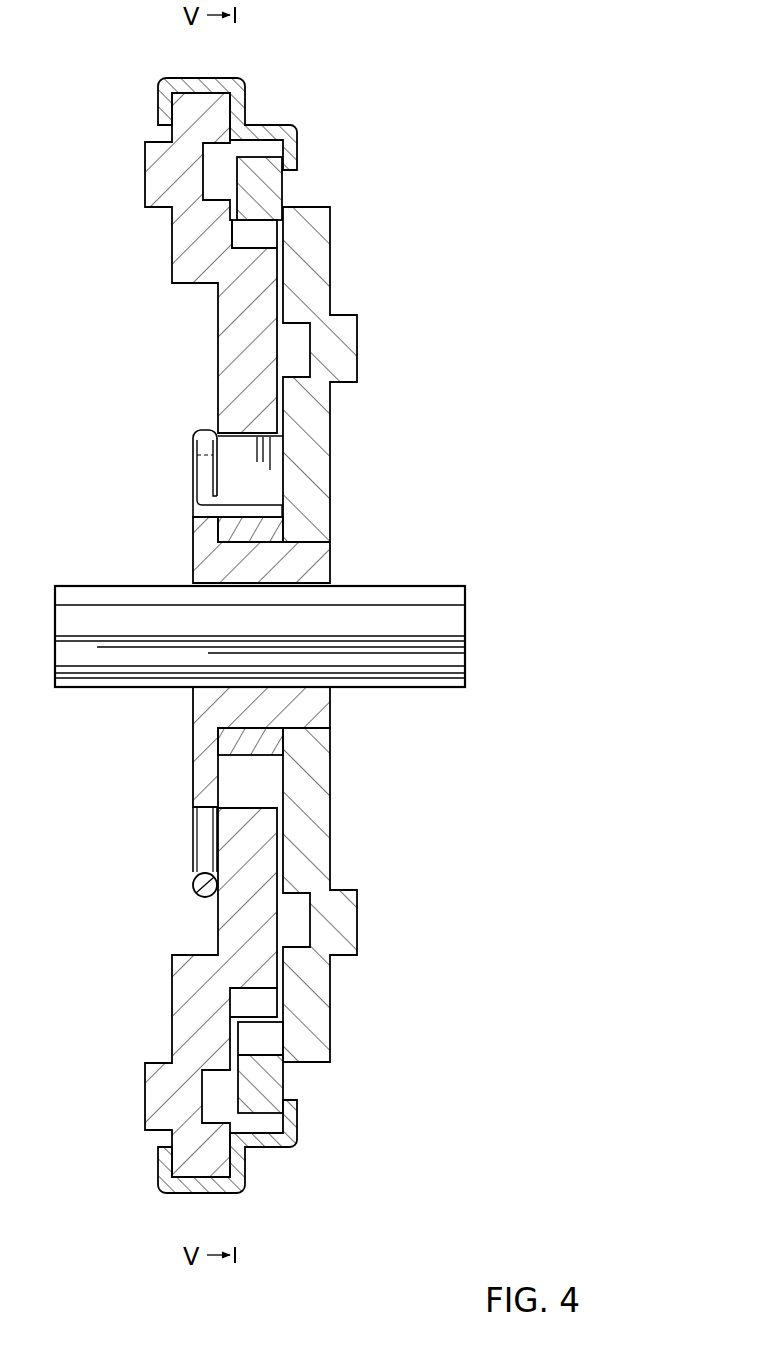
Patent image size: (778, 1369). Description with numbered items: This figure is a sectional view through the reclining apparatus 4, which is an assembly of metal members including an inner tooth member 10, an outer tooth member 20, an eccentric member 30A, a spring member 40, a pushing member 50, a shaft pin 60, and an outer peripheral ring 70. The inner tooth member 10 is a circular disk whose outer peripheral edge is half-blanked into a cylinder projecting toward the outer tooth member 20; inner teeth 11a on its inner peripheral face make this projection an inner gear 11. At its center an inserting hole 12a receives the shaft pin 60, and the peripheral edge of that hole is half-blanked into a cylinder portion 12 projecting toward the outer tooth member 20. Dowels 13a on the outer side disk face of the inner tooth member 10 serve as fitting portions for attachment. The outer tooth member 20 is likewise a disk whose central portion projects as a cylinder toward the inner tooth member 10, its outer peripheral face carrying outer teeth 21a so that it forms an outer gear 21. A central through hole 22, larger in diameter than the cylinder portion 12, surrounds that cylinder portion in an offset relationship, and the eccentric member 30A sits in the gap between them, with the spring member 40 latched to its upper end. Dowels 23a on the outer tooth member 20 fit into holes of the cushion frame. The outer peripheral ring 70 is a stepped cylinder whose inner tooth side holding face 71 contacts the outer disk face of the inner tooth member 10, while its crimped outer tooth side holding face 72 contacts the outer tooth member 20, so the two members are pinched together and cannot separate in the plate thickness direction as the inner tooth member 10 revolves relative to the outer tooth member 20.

The reclining apparatus 4 is at (394, 91).
The inner tooth member 10 is at (320, 272).
The inner gear 11 is at (274, 184).
The inner teeth 11a is at (281, 235).
The cylinder portion 12 is at (252, 527).
The inserting hole 12a is at (281, 557).
The dowels 13a is at (345, 343).
The outer tooth member 20 is at (181, 229).
The outer gear 21 is at (263, 308).
The outer teeth 21a is at (233, 236).
The through hole 22 is at (246, 431).
The dowels 23a is at (150, 162).
The eccentric member 30A is at (243, 467).
The spring member 40 is at (203, 480).
The pushing member 50 is at (203, 563).
The shaft pin 60 is at (439, 603).
The outer peripheral ring 70 is at (216, 77).
The inner tooth side holding face 71 is at (293, 144).
The outer tooth side holding face 72 is at (160, 103).